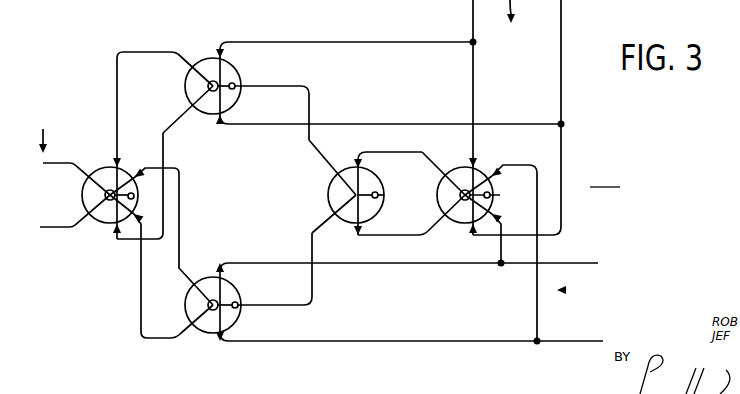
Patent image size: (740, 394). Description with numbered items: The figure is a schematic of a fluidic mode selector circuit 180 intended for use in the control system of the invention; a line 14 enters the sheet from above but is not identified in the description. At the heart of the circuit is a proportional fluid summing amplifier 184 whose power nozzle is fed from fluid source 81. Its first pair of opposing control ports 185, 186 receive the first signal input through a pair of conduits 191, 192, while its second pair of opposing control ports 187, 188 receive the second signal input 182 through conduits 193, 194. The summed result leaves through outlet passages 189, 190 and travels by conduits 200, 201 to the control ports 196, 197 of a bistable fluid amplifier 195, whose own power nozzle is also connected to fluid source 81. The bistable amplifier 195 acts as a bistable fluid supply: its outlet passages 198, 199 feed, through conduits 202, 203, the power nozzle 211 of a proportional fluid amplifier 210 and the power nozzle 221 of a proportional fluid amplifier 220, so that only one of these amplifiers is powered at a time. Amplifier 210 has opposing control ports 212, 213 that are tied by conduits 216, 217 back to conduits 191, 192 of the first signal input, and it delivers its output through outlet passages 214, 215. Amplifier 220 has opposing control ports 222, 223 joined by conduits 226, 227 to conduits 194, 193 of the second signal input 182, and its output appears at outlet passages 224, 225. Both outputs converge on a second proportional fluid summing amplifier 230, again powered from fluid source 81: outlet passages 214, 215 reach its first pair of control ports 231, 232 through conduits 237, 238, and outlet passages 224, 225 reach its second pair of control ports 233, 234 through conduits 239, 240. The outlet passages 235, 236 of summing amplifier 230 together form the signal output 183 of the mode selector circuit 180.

The input line 14 is at (335, 11).
The fluid source 81 is at (134, 197).
The mode selector circuit 180 is at (605, 177).
The second signal input 182 is at (565, 290).
The signal output 183 is at (47, 130).
The proportional fluid summing amplifier 184 is at (438, 211).
The control port 185 is at (466, 170).
The control port 186 is at (466, 229).
The control port 187 is at (486, 170).
The control port 188 is at (497, 219).
The outlet passage 189 is at (441, 181).
The outlet passage 190 is at (446, 222).
The conduit 191 is at (474, 80).
The conduit 192 is at (562, 157).
The conduit 193 is at (538, 316).
The conduit 194 is at (503, 243).
The bistable fluid amplifier 195 is at (327, 197).
The control port 196 is at (353, 163).
The control port 197 is at (349, 228).
The outlet passage 198 is at (329, 182).
The outlet passage 199 is at (329, 208).
The conduit 200 is at (376, 145).
The conduit 201 is at (388, 240).
The conduit 202 is at (311, 100).
The conduit 203 is at (314, 275).
The proportional fluid amplifier 210 is at (240, 68).
The power nozzle 211 is at (232, 92).
The control port 212 is at (211, 50).
The control port 213 is at (222, 128).
The outlet passage 214 is at (194, 66).
The outlet passage 215 is at (198, 112).
The conduit 216 is at (337, 43).
The conduit 217 is at (381, 123).
The proportional fluid amplifier 220 is at (240, 316).
The power nozzle 221 is at (229, 292).
The control port 222 is at (228, 270).
The control port 223 is at (213, 342).
The outlet passage 224 is at (198, 282).
The outlet passage 225 is at (193, 333).
The conduit 226 is at (368, 267).
The conduit 227 is at (424, 338).
The proportional fluid summing amplifier 230 is at (93, 228).
The control port 231 is at (113, 163).
The control port 232 is at (101, 223).
The control port 233 is at (138, 170).
The control port 234 is at (137, 211).
The outlet passage 235 is at (88, 184).
The outlet passage 236 is at (83, 200).
The conduit 237 is at (116, 63).
The conduit 238 is at (178, 115).
The conduit 239 is at (176, 265).
The conduit 240 is at (140, 323).